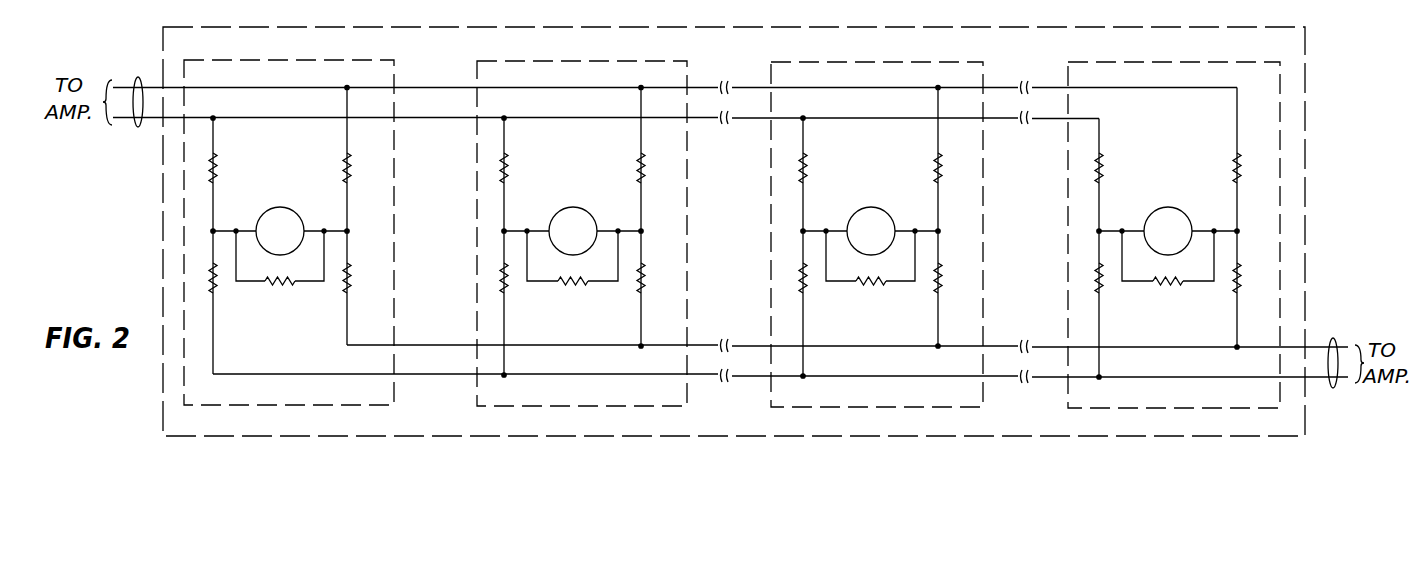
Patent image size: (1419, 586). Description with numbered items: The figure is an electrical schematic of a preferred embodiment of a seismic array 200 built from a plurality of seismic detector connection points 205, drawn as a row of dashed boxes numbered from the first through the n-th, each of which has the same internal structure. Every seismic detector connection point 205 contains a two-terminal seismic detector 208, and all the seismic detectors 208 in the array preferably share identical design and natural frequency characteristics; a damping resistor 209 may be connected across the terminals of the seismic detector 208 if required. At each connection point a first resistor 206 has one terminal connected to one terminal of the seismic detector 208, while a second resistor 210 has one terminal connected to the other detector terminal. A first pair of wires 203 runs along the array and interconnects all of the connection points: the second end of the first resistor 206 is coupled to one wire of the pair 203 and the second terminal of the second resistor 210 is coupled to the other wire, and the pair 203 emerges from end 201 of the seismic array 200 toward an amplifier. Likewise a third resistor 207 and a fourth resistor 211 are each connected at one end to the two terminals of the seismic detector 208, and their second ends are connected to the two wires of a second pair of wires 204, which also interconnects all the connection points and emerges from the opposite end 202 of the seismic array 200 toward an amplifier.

The seismic array 200 is at (1292, 28).
The end of seismic array 201 is at (151, 122).
The end of seismic array 202 is at (1319, 342).
The first pair of wires 203 is at (137, 78).
The second pair of wires 204 is at (1333, 390).
The seismic detector connection point 205 is at (275, 58).
The first resistor 206 is at (344, 165).
The third resistor 207 is at (344, 283).
The seismic detector 208 is at (281, 207).
The damping resistor 209 is at (279, 287).
The second resistor 210 is at (216, 166).
The fourth resistor 211 is at (216, 283).